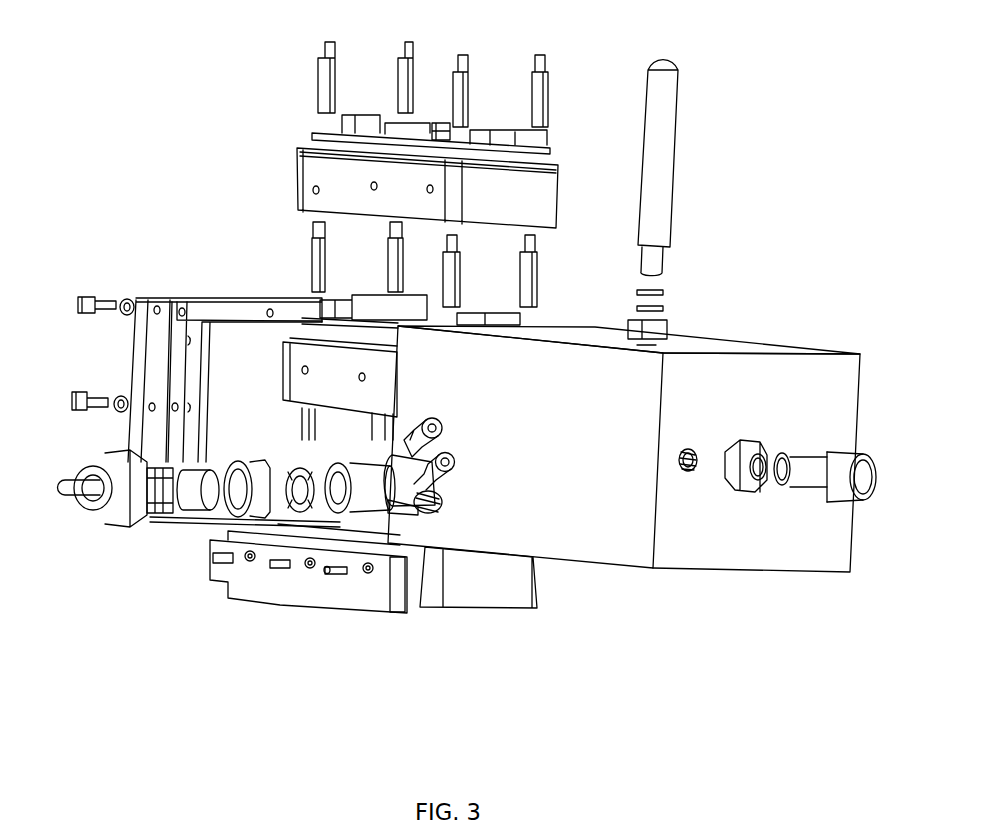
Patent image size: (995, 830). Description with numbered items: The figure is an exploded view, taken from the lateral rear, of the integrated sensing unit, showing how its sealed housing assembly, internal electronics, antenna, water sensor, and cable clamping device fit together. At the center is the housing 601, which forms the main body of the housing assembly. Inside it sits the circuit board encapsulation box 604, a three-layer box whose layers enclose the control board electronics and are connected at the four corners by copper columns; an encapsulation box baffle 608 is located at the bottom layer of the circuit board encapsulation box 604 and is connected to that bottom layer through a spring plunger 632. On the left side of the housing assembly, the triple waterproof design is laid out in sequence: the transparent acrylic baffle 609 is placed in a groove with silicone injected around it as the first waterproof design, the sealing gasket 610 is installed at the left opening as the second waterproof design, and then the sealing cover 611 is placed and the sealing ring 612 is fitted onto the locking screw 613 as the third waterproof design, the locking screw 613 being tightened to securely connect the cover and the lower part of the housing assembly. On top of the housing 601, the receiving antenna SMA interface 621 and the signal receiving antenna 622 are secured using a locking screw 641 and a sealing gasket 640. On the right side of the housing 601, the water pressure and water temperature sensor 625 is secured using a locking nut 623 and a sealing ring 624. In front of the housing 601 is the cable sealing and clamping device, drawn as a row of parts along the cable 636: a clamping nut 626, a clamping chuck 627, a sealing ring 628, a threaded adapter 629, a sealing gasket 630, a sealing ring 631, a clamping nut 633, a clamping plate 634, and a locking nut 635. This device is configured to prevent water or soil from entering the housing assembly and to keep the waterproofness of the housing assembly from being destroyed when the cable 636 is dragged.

The housing 601 is at (605, 527).
The circuit board encapsulation box 604 is at (520, 583).
The encapsulation box baffle 608 is at (308, 603).
The transparent acrylic baffle 609 is at (242, 328).
The sealing gasket 610 is at (213, 308).
The sealing cover 611 is at (143, 302).
The sealing ring 612 is at (127, 299).
The locking screw 613 is at (104, 300).
The receiving antenna SMA interface 621 is at (440, 132).
The signal receiving antenna 622 is at (658, 140).
The locking nut 623 is at (732, 468).
The sealing ring 624 is at (757, 488).
The water pressure and water temperature sensor 625 is at (803, 477).
The clamping nut 626 is at (109, 487).
The clamping chuck 627 is at (175, 505).
The sealing ring 628 is at (205, 498).
The threaded adapter 629 is at (253, 492).
The sealing gasket 630 is at (313, 510).
The sealing ring 631 is at (335, 507).
The spring plunger 632 is at (340, 575).
The clamping nut 633 is at (375, 500).
The clamping plate 634 is at (407, 490).
The locking nut 635 is at (440, 493).
The cable 636 is at (63, 490).
The sealing gasket 640 is at (662, 290).
The locking screw 641 is at (660, 332).